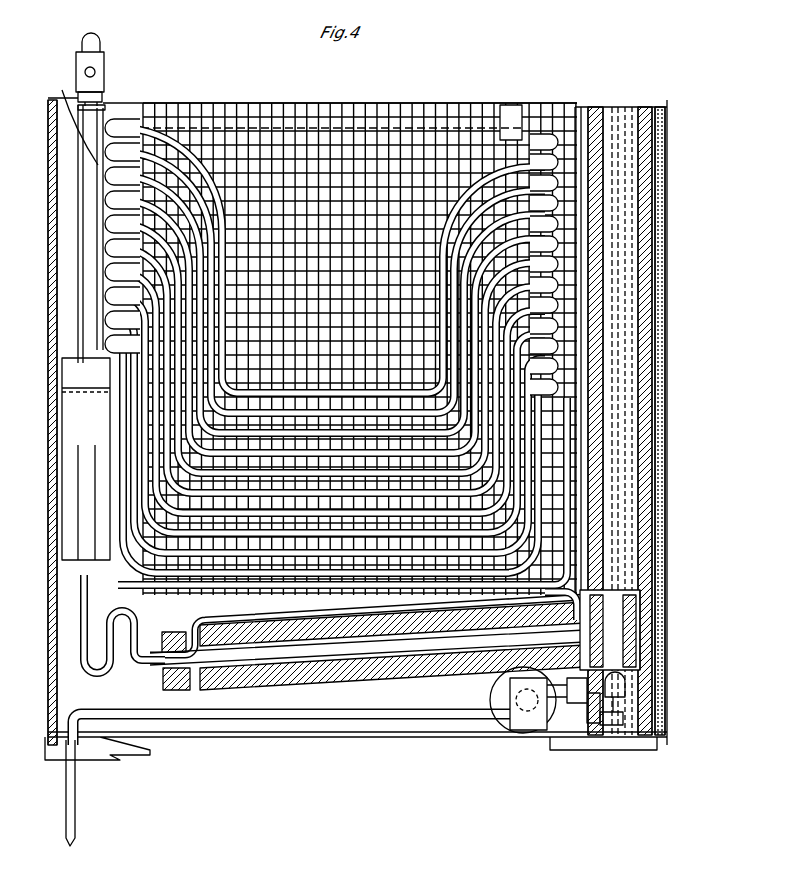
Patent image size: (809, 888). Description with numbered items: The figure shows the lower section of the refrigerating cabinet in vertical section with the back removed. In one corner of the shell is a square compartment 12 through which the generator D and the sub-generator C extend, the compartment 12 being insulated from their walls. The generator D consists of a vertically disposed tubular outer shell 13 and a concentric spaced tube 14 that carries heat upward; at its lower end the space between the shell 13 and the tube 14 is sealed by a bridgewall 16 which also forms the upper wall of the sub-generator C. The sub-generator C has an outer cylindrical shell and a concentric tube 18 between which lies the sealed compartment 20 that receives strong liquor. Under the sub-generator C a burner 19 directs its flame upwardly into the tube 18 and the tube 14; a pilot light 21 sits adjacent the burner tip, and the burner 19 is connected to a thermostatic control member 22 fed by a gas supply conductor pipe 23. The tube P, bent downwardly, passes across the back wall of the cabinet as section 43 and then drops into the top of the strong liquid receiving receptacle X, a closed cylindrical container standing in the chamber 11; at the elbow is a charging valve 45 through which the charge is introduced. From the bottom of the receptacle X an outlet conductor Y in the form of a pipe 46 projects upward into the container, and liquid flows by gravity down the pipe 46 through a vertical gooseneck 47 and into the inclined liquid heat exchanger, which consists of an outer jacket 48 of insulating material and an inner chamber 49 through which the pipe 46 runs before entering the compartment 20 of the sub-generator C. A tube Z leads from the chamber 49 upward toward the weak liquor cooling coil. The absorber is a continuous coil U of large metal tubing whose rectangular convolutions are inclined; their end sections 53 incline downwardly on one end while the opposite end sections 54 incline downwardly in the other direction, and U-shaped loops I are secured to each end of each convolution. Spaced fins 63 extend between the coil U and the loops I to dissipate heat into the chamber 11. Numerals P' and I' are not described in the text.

The charging valve 45 is at (104, 70).
The end sections 53 is at (62, 98).
The tube section 43 is at (123, 110).
The fins 63 is at (360, 103).
The tube P is at (567, 335).
The coil U is at (98, 233).
The compartment 12 is at (598, 110).
The outer shell 13 is at (626, 110).
The tube 14 is at (646, 110).
The generator D is at (660, 110).
The end sections 54 is at (555, 213).
The loops I is at (307, 350).
The suction pipe P' is at (609, 566).
The bridgewall 16 is at (600, 597).
The compartment 20 is at (603, 618).
The chamber 11 is at (645, 645).
The sub-generator C is at (650, 672).
The tube 18 is at (626, 690).
The burner 19 is at (624, 718).
The strong liquid receiving receptacle X is at (110, 580).
The gooseneck 47 is at (172, 634).
The outer jacket 48 is at (190, 636).
The tube Z is at (252, 624).
The pipe 46 is at (80, 645).
The outlet conductor Y is at (108, 675).
The tube I' is at (337, 691).
The inner chamber 49 is at (440, 668).
The gas supply conductor pipe 23 is at (445, 722).
The thermostatic control member 22 is at (528, 732).
The pilot light 21 is at (592, 724).